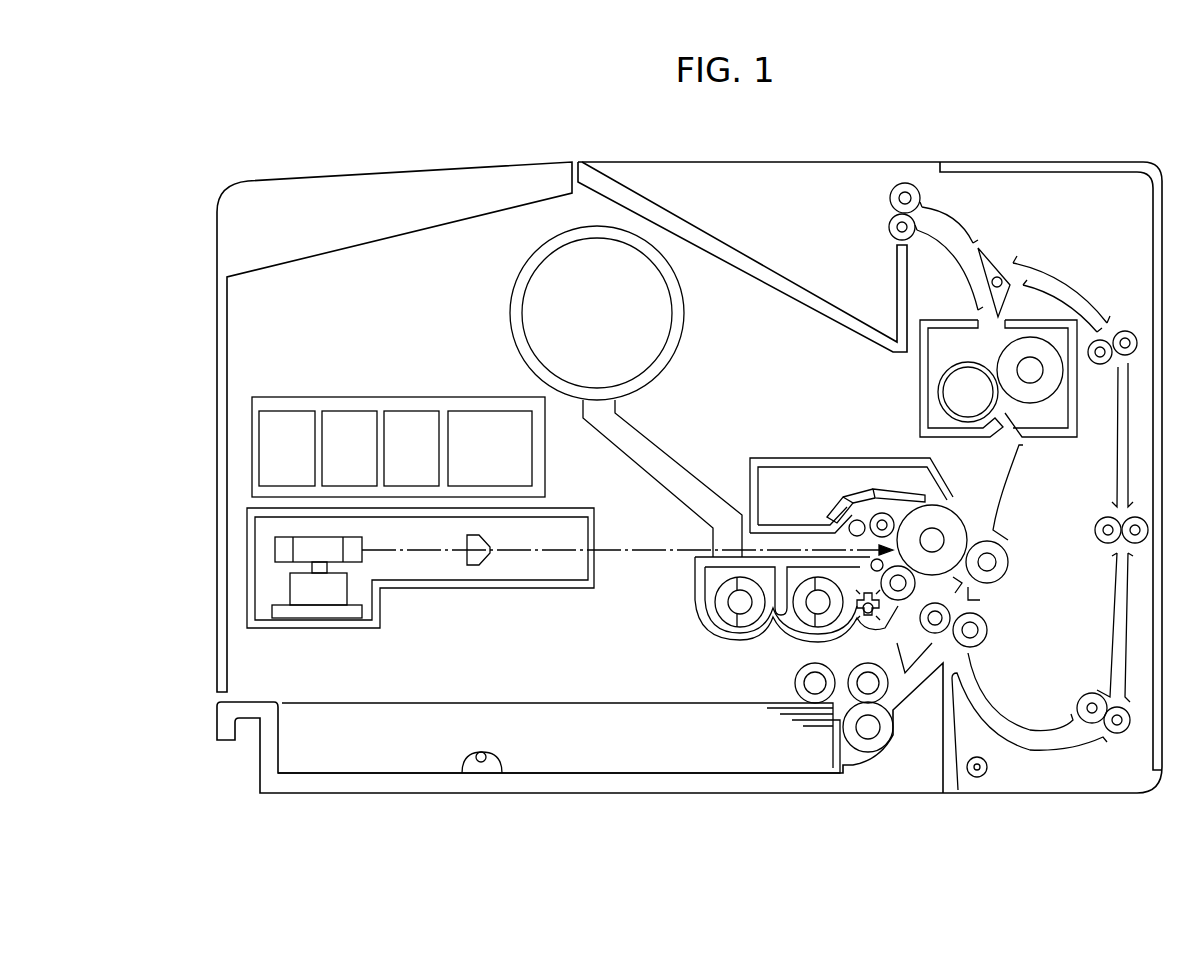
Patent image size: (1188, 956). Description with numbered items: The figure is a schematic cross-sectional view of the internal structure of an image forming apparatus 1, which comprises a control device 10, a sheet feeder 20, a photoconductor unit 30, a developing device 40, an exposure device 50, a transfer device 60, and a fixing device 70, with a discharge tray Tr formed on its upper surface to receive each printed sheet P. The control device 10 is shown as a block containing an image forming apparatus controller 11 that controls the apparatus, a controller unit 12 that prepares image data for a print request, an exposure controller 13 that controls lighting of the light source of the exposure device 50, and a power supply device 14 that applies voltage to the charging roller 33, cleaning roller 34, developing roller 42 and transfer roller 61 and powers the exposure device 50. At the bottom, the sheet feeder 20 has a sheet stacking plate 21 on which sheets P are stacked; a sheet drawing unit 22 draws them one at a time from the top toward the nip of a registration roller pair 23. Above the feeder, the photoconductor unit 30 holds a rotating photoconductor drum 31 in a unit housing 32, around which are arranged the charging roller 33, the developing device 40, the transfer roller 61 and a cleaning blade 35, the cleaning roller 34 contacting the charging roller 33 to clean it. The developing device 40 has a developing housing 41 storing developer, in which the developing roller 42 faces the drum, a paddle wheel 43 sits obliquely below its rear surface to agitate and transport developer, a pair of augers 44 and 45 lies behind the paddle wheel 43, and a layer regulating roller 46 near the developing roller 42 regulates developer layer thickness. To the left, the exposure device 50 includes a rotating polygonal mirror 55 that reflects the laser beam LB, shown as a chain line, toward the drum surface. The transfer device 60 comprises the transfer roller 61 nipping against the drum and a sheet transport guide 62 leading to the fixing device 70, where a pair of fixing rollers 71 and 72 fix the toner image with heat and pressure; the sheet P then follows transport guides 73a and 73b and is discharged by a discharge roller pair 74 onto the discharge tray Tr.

The image forming apparatus 1 is at (230, 165).
The control device 10 is at (362, 409).
The image forming apparatus controller 11 is at (300, 423).
The controller unit 12 is at (483, 425).
The exposure controller 13 is at (412, 423).
The power supply device 14 is at (357, 423).
The sheet feeder 20 is at (585, 732).
The sheet stacking plate 21 is at (782, 773).
The sheet drawing unit 22 is at (772, 683).
The registration roller pair 23 is at (950, 614).
The photoconductor unit 30 is at (851, 480).
The photoconductor drum 31 is at (957, 527).
The unit housing 32 is at (753, 500).
The charging roller 33 is at (882, 513).
The cleaning roller 34 is at (848, 518).
The cleaning blade 35 is at (882, 495).
The developing device 40 is at (763, 611).
The developing housing 41 is at (698, 589).
The developing roller 42 is at (900, 600).
The paddle wheel 43 is at (863, 617).
The auger 44 is at (803, 610).
The auger 45 is at (723, 610).
The layer regulating roller 46 is at (877, 571).
The exposure device 50 is at (367, 568).
The rotating polygonal mirror 55 is at (280, 550).
The transfer device 60 is at (1021, 514).
The transfer roller 61 is at (1008, 562).
The sheet transport guide 62 is at (1020, 470).
The fixing device 70 is at (988, 332).
The fixing roller 71 is at (938, 390).
The fixing roller 72 is at (1040, 357).
The transport guide 73a is at (957, 227).
The transport guide 73b is at (950, 250).
The discharge roller pair 74 is at (891, 216).
The discharge tray Tr is at (668, 220).
The laser beam LB is at (633, 540).
The sheet P is at (727, 750).